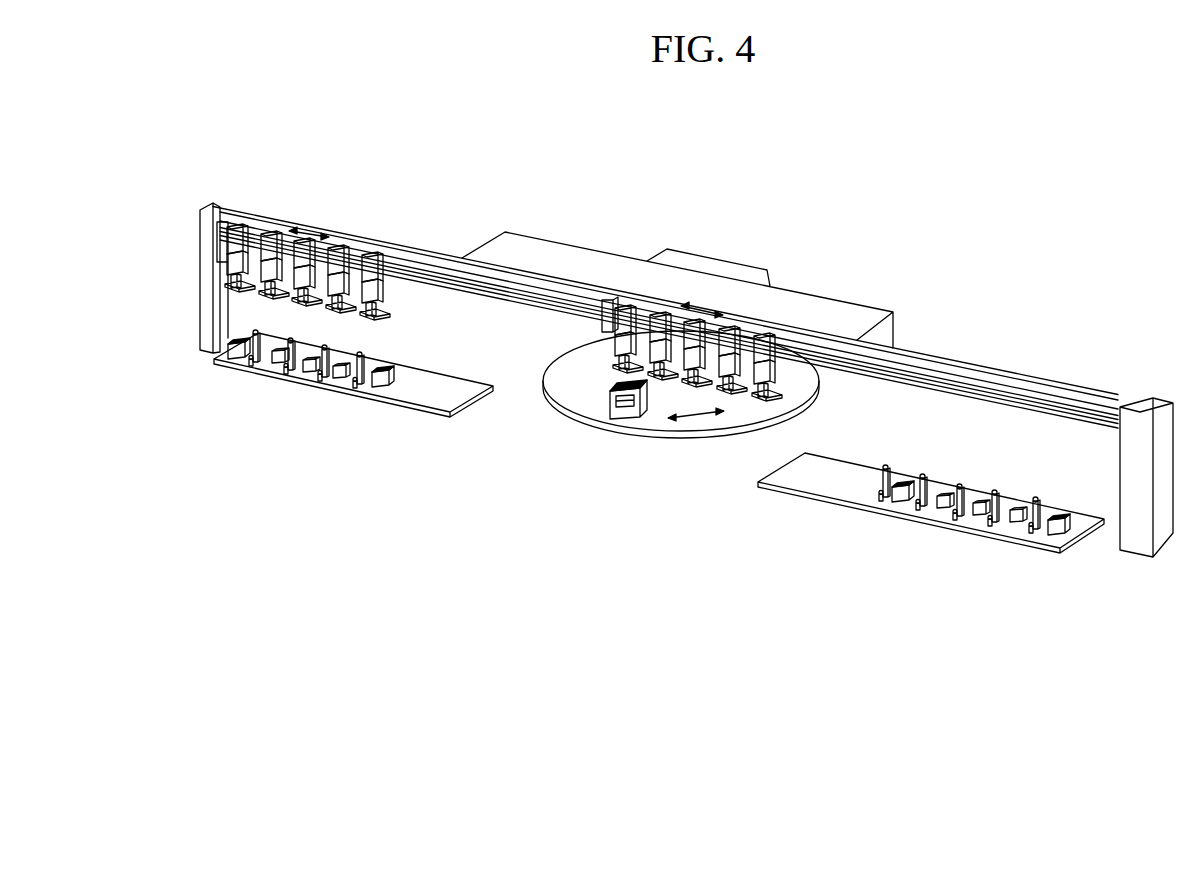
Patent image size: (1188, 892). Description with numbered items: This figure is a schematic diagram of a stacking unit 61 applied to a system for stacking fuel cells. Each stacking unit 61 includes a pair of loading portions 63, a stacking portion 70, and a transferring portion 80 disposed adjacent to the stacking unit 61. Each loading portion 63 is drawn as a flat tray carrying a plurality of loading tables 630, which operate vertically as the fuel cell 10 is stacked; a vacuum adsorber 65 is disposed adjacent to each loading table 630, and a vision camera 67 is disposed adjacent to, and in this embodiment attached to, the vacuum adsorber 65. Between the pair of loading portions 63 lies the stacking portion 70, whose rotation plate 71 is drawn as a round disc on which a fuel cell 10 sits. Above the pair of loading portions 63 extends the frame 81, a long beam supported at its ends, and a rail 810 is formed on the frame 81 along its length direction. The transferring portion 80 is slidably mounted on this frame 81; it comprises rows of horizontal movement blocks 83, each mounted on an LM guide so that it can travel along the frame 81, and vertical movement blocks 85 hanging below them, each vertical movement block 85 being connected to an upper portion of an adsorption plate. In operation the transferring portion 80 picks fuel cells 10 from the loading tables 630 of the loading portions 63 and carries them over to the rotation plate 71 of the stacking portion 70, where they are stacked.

The stacking unit 61 is at (367, 139).
The transferring portion 80 is at (1128, 378).
The frame 81 is at (1031, 380).
The rail 810 is at (948, 372).
The horizontal movement block 83 is at (392, 275).
The vertical movement block 85 is at (385, 297).
The stacking portion 70 is at (678, 428).
The rotation plate 71 is at (592, 400).
The loading portion 63 is at (216, 380).
The vacuum adsorber 65 is at (366, 392).
The vision camera 67 is at (347, 385).
The loading table 630 is at (400, 395).
The fuel cell 10 is at (393, 371).